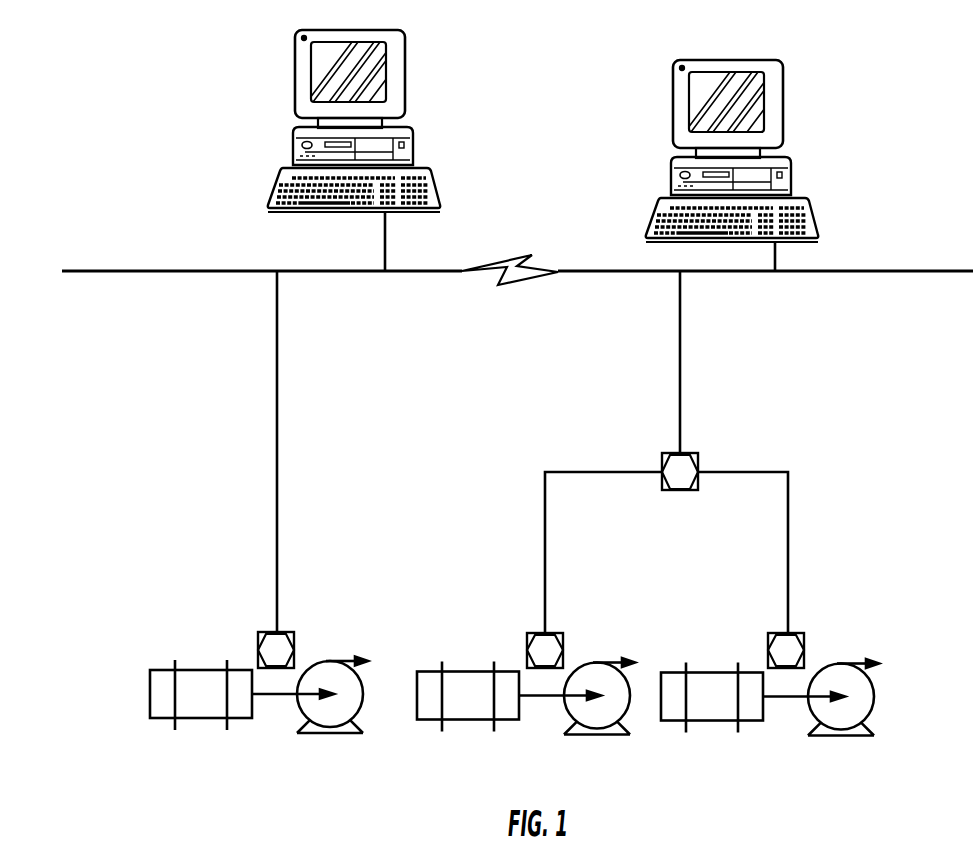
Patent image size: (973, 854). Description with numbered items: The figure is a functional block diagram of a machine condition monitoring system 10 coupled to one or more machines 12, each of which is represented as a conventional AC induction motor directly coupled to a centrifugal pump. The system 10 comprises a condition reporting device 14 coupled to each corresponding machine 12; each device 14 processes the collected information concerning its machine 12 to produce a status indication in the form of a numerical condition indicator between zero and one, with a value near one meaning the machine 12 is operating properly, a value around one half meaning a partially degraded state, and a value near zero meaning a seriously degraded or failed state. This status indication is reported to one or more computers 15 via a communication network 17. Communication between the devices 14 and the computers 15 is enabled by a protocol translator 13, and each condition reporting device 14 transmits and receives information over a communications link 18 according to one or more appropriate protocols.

The machine condition monitoring system 10 is at (893, 94).
The machine 12 is at (268, 694).
The protocol translator 13 is at (680, 453).
The condition reporting device 14 is at (277, 632).
The computer 15 is at (405, 75).
The communication network 17 is at (596, 273).
The communications link 18 is at (277, 400).